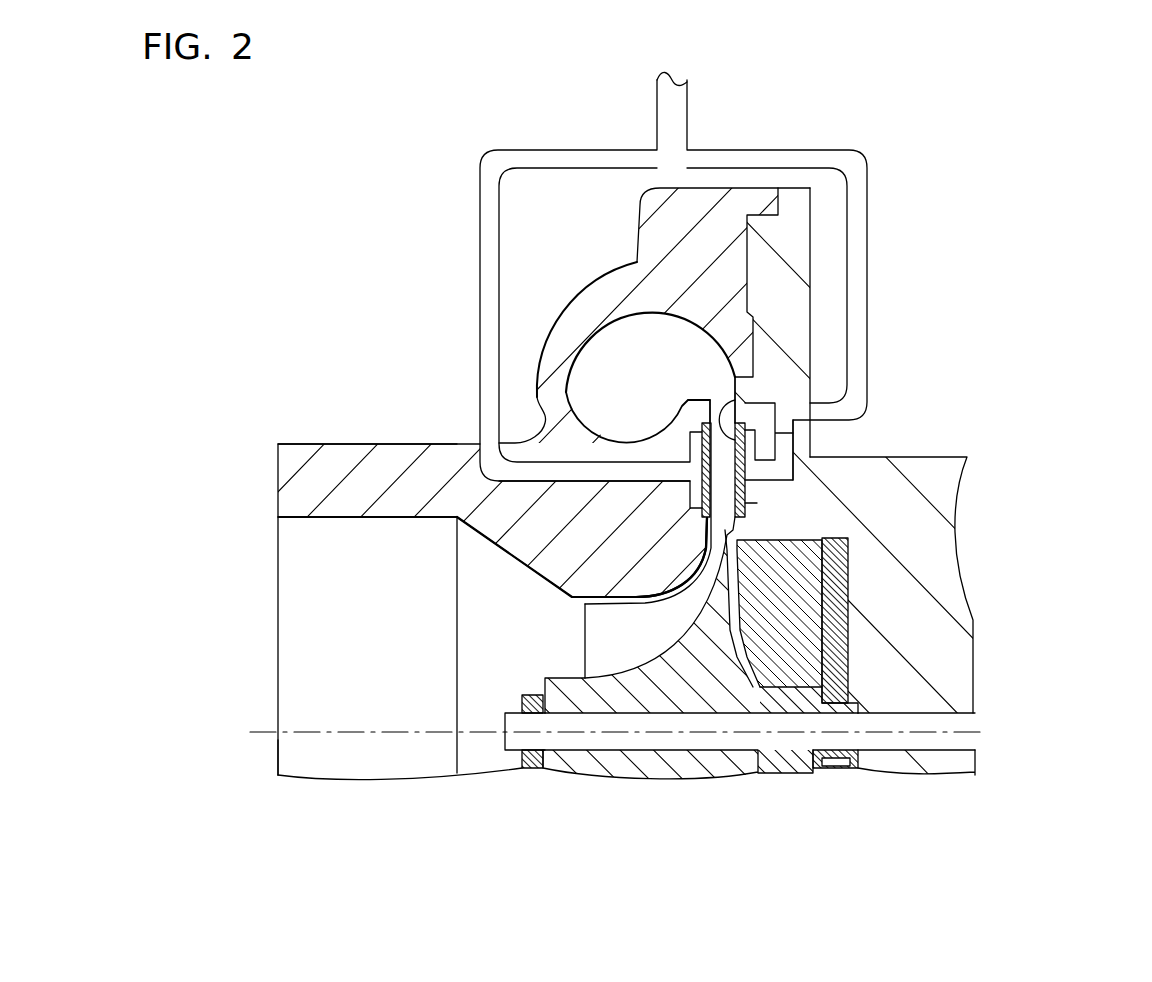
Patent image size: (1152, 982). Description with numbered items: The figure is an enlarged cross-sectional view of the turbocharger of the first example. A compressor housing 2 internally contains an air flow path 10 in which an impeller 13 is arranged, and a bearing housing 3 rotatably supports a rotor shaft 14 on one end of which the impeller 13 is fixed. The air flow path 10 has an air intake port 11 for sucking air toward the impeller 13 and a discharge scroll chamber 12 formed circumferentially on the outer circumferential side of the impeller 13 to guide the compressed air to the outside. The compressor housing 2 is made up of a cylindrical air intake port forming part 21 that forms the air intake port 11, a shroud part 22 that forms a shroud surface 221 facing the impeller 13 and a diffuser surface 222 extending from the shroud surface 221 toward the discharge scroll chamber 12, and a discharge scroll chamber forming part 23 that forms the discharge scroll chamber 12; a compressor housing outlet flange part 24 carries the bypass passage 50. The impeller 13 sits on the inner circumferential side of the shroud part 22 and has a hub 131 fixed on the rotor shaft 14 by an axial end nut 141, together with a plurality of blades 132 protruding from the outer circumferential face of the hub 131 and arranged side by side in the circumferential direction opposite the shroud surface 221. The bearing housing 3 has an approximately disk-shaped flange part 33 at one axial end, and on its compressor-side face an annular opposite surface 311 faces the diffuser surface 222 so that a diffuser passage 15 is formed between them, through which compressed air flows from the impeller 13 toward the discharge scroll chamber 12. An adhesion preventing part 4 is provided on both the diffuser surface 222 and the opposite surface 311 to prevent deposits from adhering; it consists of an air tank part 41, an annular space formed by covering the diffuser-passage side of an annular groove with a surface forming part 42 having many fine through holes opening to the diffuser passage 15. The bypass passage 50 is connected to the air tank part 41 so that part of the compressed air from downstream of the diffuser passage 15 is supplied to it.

The compressor housing 2 is at (292, 467).
The bearing housing 3 is at (935, 632).
The adhesion preventing part 4 is at (777, 489).
The air flow path 10 is at (417, 705).
The air intake port 11 is at (303, 755).
The discharge scroll chamber 12 is at (618, 345).
The impeller 13 is at (550, 651).
The rotor shaft 14 is at (955, 712).
The diffuser passage 15 is at (737, 402).
The air intake port forming part 21 is at (317, 482).
The shroud part 22 is at (545, 535).
The discharge scroll chamber forming part 23 is at (563, 333).
The compressor housing outlet flange part 24 is at (622, 497).
The flange part 33 is at (790, 243).
The air tank part 41 is at (697, 433).
The surface forming part 42 is at (703, 432).
The bypass passage 50 is at (485, 285).
The hub 131 is at (590, 697).
The blades 132 is at (618, 643).
The axial end nut 141 is at (527, 693).
The shroud surface 221 is at (678, 577).
The diffuser surface 222 is at (716, 530).
The opposite surface 311 is at (720, 396).